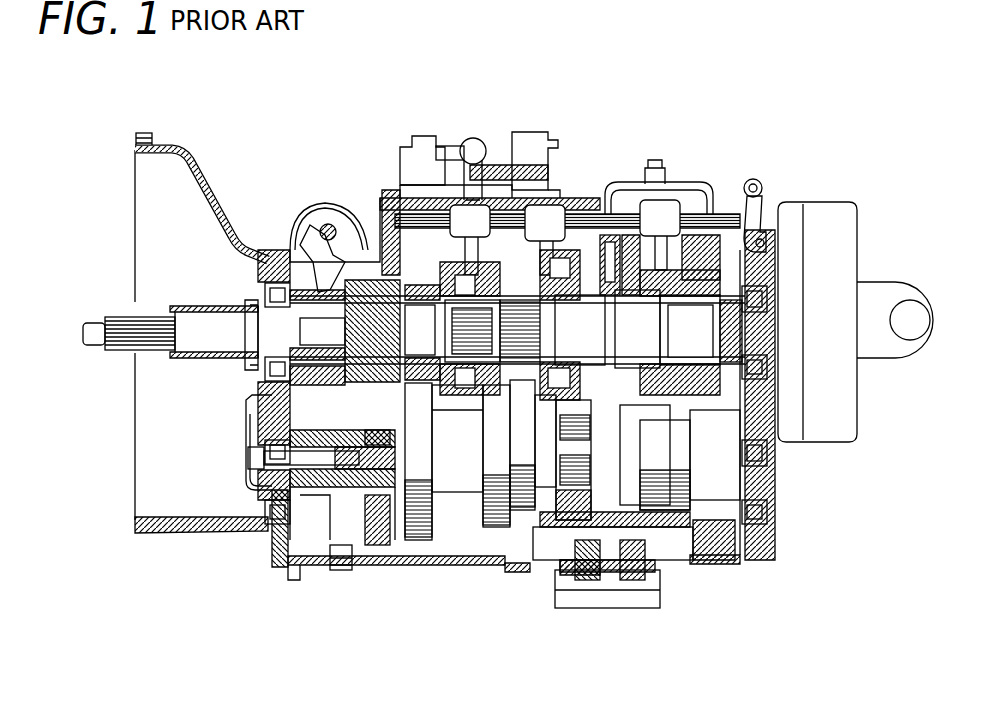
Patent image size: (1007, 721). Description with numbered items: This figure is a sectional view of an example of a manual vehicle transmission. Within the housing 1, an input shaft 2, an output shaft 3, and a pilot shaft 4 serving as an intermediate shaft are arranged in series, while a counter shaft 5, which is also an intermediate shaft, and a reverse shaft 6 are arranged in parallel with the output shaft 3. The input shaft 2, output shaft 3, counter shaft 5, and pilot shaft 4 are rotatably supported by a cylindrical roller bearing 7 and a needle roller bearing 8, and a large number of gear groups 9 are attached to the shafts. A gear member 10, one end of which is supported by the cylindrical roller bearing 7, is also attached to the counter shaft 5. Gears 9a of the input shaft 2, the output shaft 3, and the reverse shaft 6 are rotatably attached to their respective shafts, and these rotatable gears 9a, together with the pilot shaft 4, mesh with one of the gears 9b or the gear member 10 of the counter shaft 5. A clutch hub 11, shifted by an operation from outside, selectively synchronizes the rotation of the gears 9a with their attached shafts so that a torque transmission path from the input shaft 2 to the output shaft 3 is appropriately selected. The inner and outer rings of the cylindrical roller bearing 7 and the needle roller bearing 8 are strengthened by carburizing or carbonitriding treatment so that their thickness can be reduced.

The housing 1 is at (697, 131).
The input shaft 2 is at (189, 325).
The output shaft 3 is at (700, 331).
The pilot shaft 4 is at (248, 337).
The counter shaft 5 is at (652, 462).
The reverse shaft 6 is at (700, 545).
The cylindrical roller bearing 7 is at (262, 420).
The needle roller bearing 8 is at (250, 294).
The gear groups 9 is at (421, 545).
The gears 9a is at (312, 262).
The gears 9b is at (444, 542).
The gear member 10 is at (337, 490).
The clutch hub 11 is at (332, 225).